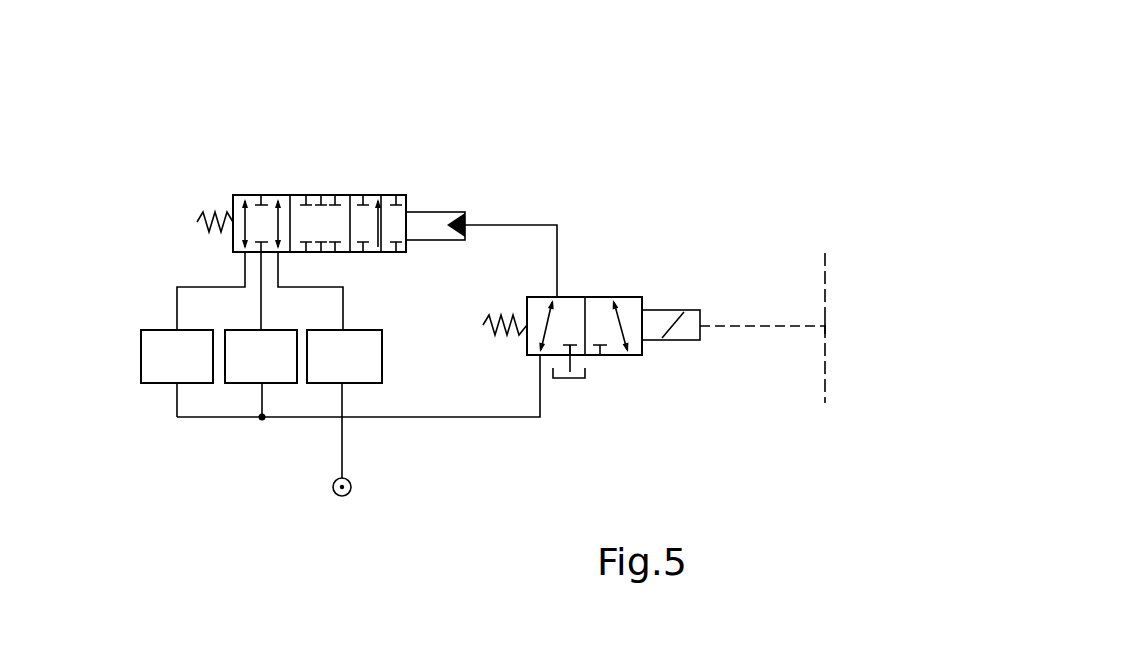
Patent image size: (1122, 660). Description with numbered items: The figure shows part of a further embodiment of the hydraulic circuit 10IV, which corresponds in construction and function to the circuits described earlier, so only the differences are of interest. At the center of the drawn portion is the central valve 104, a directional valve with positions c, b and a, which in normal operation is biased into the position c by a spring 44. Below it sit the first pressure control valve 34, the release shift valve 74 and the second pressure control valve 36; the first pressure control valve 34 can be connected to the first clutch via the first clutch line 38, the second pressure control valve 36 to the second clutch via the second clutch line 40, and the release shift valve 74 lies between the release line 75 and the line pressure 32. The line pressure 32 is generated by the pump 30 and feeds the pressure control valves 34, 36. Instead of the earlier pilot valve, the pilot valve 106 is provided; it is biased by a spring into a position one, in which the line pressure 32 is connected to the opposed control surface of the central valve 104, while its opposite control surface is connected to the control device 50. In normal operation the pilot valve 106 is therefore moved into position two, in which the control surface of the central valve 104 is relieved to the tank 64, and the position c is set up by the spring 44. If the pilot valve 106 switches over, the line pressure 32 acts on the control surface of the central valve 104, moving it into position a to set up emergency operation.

The hydraulic circuit 10IV is at (677, 168).
The central valve 104 is at (408, 192).
The pilot valve 106 is at (632, 294).
The spring 44 is at (204, 213).
The first clutch line 38 is at (177, 303).
The release line 75 is at (257, 310).
The second clutch line 40 is at (343, 308).
The first pressure control valve 34 is at (152, 385).
The release shift valve 74 is at (240, 385).
The second pressure control valve 36 is at (362, 385).
The line pressure 32 is at (494, 420).
The pump 30 is at (351, 492).
The tank 64 is at (577, 380).
The control device 50 is at (826, 378).